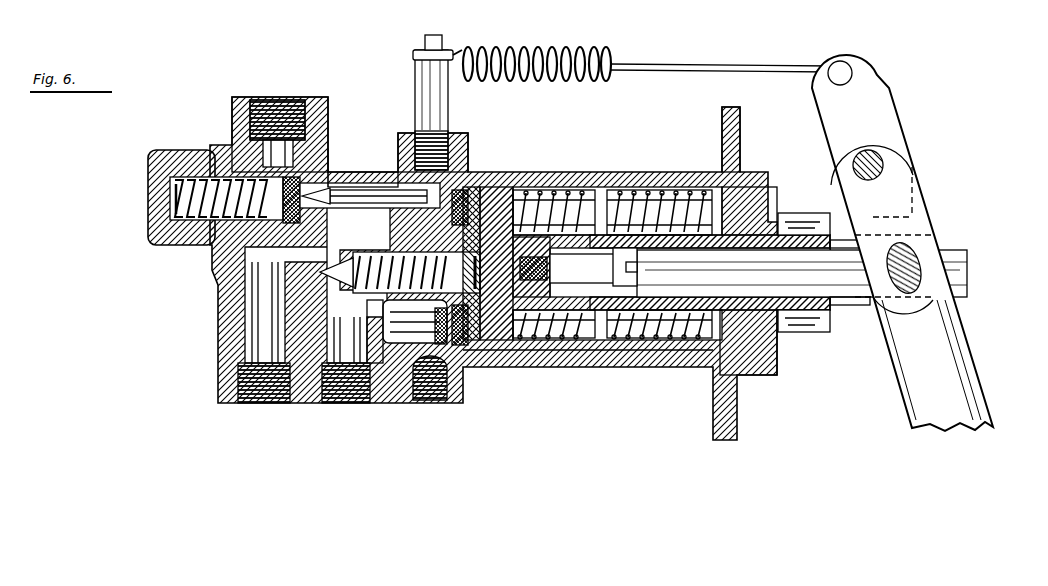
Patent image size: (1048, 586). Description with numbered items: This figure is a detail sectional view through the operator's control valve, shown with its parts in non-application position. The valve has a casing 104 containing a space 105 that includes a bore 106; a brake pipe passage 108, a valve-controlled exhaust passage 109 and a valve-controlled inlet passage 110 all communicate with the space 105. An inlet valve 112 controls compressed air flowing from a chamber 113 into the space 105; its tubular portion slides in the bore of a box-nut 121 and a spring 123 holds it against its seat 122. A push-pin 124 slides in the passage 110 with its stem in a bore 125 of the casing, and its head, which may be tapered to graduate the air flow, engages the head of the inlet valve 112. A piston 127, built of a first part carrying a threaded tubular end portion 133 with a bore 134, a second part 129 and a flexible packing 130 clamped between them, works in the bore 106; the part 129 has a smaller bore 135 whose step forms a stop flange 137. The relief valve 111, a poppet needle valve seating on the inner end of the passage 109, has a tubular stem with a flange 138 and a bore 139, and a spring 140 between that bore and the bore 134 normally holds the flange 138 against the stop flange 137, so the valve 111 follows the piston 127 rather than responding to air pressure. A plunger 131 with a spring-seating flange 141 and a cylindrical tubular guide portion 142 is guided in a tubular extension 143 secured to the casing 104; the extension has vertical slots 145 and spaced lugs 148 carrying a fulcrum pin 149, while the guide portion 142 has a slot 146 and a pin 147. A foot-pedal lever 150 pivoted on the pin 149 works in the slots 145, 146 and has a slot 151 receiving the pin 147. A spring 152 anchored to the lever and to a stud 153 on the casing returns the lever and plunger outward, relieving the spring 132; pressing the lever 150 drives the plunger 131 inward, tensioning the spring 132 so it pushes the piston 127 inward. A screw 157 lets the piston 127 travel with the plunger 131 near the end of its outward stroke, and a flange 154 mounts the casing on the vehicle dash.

The casing 104 is at (640, 170).
The space 105 is at (253, 232).
The bore 106 is at (425, 188).
The brake pipe passage 108 is at (340, 402).
The valve-controlled exhaust passage 109 is at (265, 365).
The valve-controlled inlet passage 110 is at (341, 170).
The relief valve 111 is at (331, 256).
The inlet valve 112 is at (265, 172).
The chamber 113 is at (252, 177).
The box-nut 121 is at (156, 235).
The seat 122 is at (328, 178).
The spring 123 is at (170, 208).
The push-pin 124 is at (331, 168).
The bore 125 is at (372, 183).
The piston 127 is at (531, 196).
The piston part 129 is at (474, 176).
The flexible packing 130 is at (470, 350).
The plunger 131 is at (662, 342).
The spring 132 is at (630, 350).
The threaded tubular end portion 133 is at (458, 367).
The bore 134 is at (498, 187).
The bore 135 is at (390, 345).
The stop flange 137 is at (413, 355).
The flange 138 is at (426, 402).
The bore 139 is at (441, 383).
The spring 140 is at (392, 278).
The spring-seating flange 141 is at (712, 370).
The cylindrical tubular guide portion 142 is at (748, 330).
The tubular extension 143 is at (753, 223).
The slots 145 is at (824, 222).
The slot 146 is at (858, 307).
The pin 147 is at (940, 229).
The spaced lugs 148 is at (831, 197).
The fulcrum pin 149 is at (880, 158).
The foot-pedal lever 150 is at (950, 337).
The slot 151 is at (908, 245).
The spring 152 is at (580, 47).
The stud 153 is at (453, 91).
The flange 154 is at (730, 135).
The screw 157 is at (568, 262).